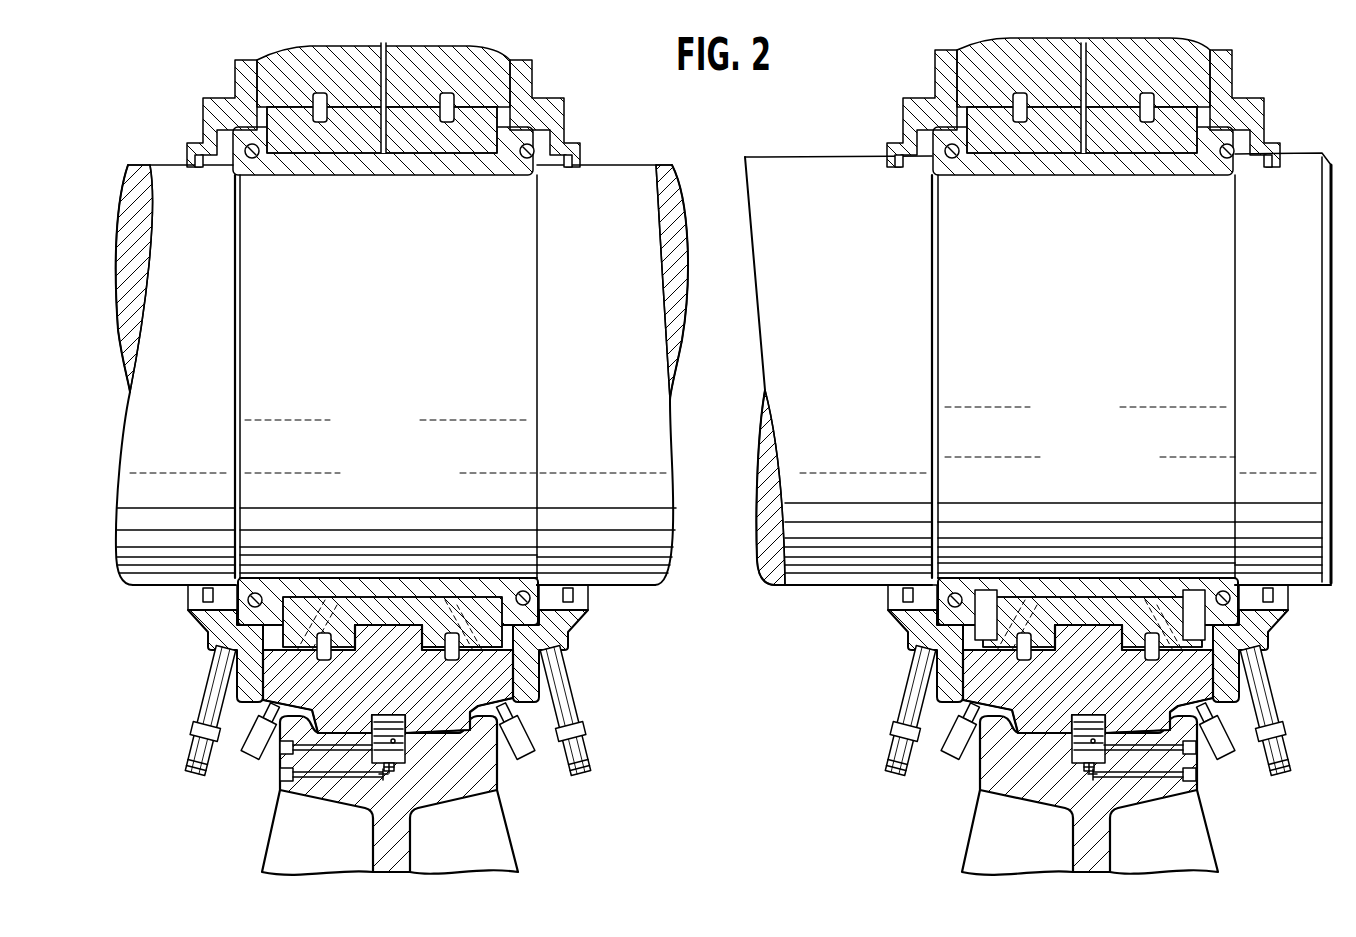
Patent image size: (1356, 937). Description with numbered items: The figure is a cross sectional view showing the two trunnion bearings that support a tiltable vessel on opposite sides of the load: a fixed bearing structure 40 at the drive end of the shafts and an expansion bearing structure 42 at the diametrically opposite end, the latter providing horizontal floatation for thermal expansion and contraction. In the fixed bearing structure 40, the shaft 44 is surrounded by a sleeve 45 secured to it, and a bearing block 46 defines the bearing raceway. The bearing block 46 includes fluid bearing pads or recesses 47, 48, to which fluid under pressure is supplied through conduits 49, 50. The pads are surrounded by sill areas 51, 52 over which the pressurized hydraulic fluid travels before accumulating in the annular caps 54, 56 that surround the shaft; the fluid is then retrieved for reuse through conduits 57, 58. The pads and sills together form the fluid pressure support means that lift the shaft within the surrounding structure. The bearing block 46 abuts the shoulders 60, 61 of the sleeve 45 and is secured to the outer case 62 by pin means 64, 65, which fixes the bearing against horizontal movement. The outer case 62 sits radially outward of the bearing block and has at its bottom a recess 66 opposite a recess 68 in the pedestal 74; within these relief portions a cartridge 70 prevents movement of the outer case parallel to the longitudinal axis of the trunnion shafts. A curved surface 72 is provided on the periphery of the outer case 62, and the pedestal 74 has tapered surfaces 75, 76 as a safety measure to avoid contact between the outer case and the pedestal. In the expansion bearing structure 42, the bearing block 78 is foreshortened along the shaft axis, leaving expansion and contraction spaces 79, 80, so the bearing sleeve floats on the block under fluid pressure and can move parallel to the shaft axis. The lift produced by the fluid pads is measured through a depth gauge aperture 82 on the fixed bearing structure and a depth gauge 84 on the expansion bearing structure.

The fixed bearing structure 40 is at (591, 80).
The expansion bearing structure 42 is at (887, 69).
The shaft 44 is at (441, 356).
The sleeve 45 is at (413, 170).
The bearing block 46 is at (487, 600).
The fluid bearing pad 47 is at (326, 597).
The fluid bearing pad 48 is at (433, 600).
The conduit 49 is at (259, 720).
The conduit 50 is at (512, 738).
The sill area 51 is at (300, 597).
The sill area 52 is at (478, 607).
The annular cap 54 is at (228, 608).
The annular cap 56 is at (560, 605).
The conduit 57 is at (210, 690).
The conduit 58 is at (582, 690).
The shoulder 60 is at (277, 597).
The shoulder 61 is at (500, 597).
The outer case 62 is at (463, 723).
The pin means 64 is at (325, 660).
The pin means 65 is at (449, 658).
The recess 66 is at (440, 737).
The recess 68 is at (400, 765).
The cartridge 70 is at (388, 715).
The curved surface 72 is at (463, 742).
The pedestal 74 is at (325, 800).
The tapered surface 75 is at (270, 742).
The tapered surface 76 is at (515, 715).
The bearing block 78 is at (1098, 597).
The expansion and contraction space 79 is at (988, 600).
The expansion and contraction space 80 is at (1193, 597).
The depth gauge aperture 82 is at (455, 53).
The depth gauge 84 is at (1060, 60).